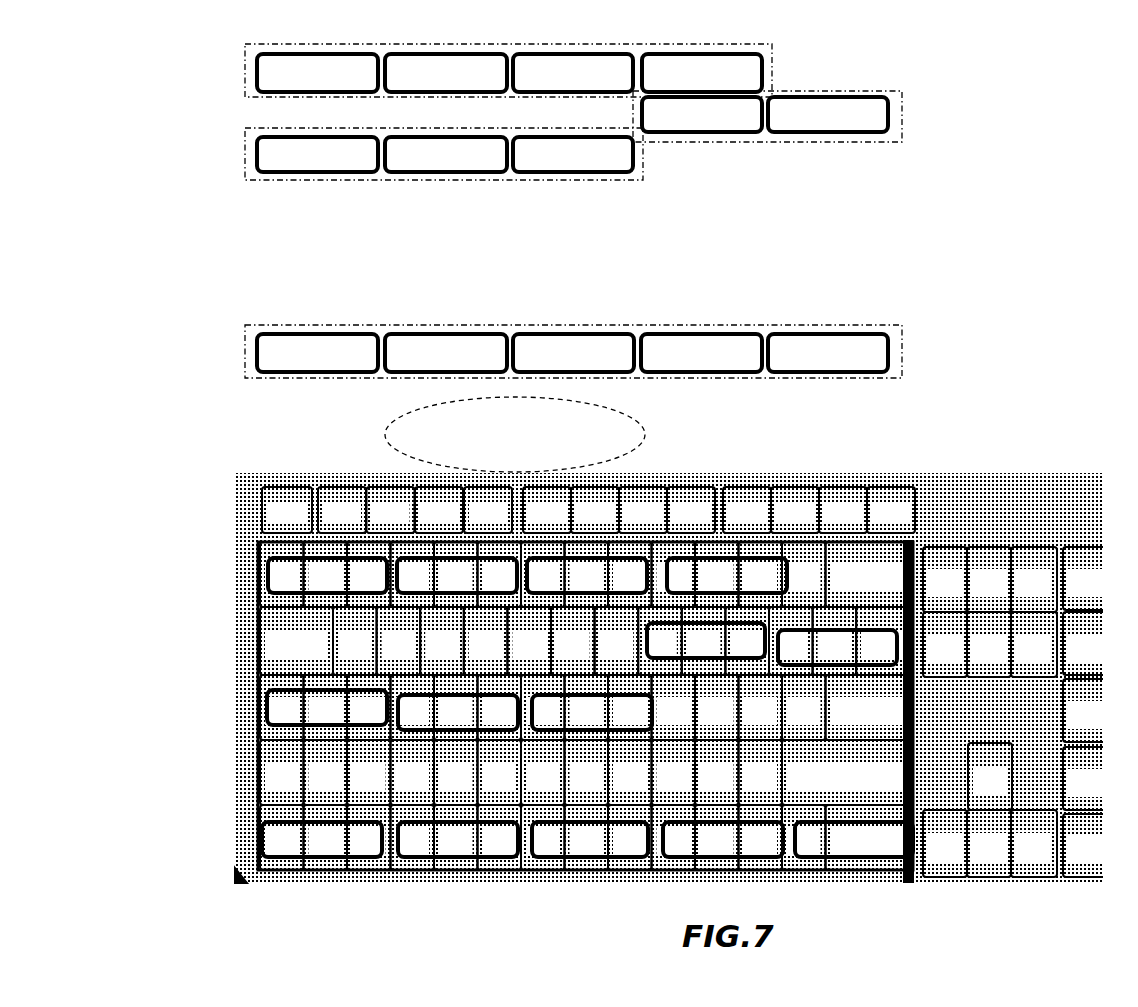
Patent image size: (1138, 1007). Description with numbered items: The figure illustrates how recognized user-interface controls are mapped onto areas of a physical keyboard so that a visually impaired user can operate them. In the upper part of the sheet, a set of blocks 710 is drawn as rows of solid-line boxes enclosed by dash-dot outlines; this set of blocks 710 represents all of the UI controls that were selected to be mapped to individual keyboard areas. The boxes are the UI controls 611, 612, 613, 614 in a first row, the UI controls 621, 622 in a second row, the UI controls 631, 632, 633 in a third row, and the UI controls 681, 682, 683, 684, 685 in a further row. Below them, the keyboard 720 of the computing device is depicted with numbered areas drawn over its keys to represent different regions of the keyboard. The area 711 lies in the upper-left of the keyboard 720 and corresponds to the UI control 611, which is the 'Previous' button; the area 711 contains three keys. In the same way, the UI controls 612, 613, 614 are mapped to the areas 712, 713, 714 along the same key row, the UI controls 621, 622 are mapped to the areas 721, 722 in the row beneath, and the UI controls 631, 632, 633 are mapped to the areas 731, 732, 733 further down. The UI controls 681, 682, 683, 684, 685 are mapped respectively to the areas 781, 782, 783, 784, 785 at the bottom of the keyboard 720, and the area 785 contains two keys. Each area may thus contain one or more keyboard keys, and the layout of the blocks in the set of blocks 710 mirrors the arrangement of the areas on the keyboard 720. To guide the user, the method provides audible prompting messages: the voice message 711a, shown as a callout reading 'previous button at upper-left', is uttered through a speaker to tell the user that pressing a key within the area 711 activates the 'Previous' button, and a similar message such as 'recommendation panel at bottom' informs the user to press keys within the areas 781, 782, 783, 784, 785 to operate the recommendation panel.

The set of blocks 710 is at (1010, 48).
The keyboard 720 is at (938, 430).
The voice message 711a is at (404, 461).
The UI control 611 is at (301, 85).
The UI control 612 is at (429, 85).
The UI control 613 is at (556, 85).
The UI control 614 is at (685, 85).
The UI control 621 is at (702, 114).
The UI control 622 is at (811, 125).
The UI control 631 is at (301, 165).
The UI control 632 is at (429, 165).
The UI control 633 is at (556, 165).
The UI control 681 is at (301, 365).
The UI control 682 is at (429, 365).
The UI control 683 is at (556, 365).
The UI control 684 is at (685, 365).
The UI control 685 is at (811, 365).
The area 711 is at (313, 586).
The area 712 is at (443, 586).
The area 713 is at (573, 586).
The area 714 is at (713, 586).
The area 721 is at (692, 651).
The area 722 is at (823, 658).
The area 731 is at (313, 718).
The area 732 is at (444, 723).
The area 733 is at (578, 723).
The area 781 is at (308, 850).
The area 782 is at (444, 850).
The area 783 is at (576, 850).
The area 784 is at (709, 850).
The area 785 is at (840, 850).